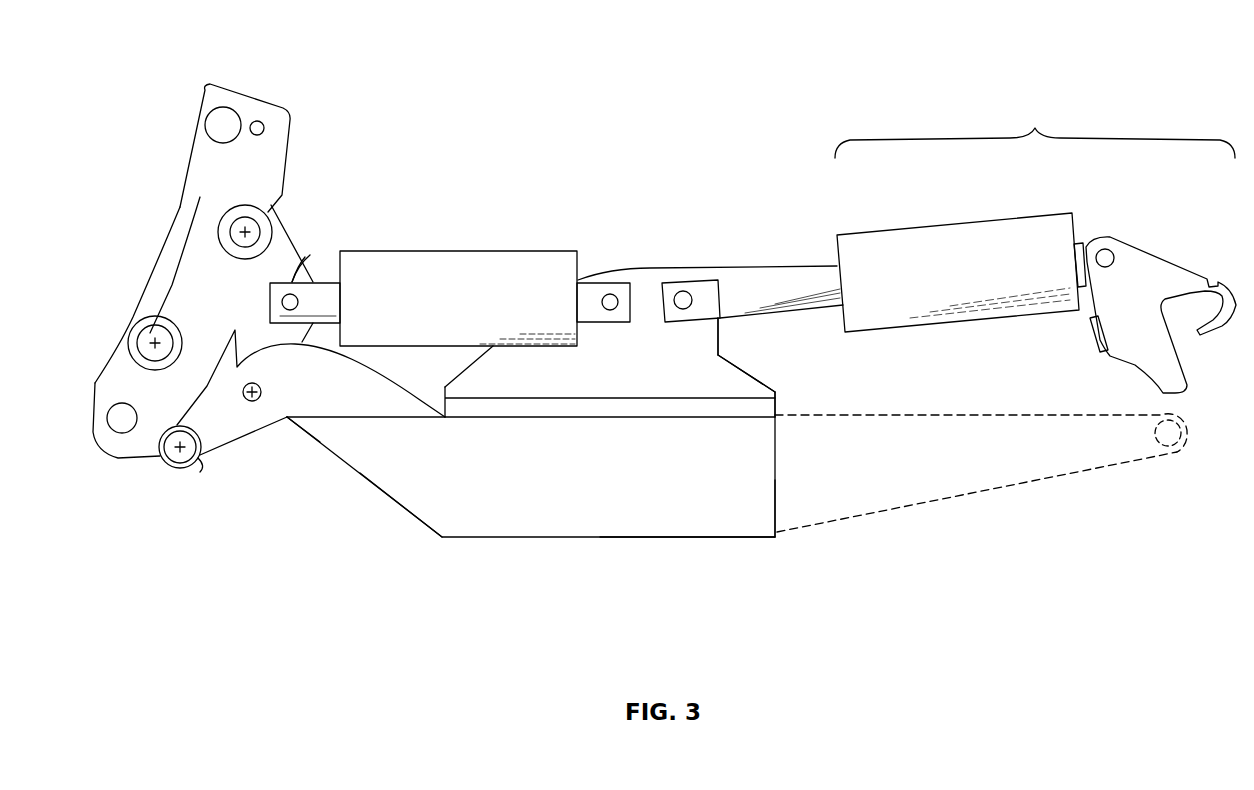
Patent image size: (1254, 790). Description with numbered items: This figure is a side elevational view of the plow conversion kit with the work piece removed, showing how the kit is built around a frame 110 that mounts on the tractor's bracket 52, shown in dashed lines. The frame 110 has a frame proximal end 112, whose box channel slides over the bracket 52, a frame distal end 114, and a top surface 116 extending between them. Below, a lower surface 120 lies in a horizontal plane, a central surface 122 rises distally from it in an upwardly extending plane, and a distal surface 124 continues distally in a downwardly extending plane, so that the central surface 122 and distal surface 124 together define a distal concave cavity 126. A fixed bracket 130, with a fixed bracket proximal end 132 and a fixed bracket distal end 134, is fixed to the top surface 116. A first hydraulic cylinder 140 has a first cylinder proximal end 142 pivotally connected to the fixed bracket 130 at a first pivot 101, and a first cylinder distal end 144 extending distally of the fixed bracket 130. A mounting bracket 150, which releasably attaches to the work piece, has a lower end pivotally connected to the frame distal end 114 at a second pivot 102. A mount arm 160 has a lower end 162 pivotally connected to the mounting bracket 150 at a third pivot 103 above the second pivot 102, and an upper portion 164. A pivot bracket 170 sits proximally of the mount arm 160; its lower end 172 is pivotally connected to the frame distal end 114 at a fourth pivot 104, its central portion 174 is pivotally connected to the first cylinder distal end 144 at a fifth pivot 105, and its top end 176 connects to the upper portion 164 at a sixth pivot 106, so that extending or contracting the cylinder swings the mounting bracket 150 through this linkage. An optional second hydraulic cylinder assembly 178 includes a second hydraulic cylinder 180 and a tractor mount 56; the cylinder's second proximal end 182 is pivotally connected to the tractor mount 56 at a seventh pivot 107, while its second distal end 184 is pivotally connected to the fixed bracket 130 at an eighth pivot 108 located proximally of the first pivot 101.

The bracket 52 is at (934, 480).
The tractor mount 56 is at (1165, 258).
The first pivot 101 is at (610, 296).
The second pivot 102 is at (173, 455).
The third pivot 103 is at (143, 342).
The fourth pivot 104 is at (262, 392).
The fifth pivot 105 is at (298, 302).
The sixth pivot 106 is at (224, 226).
The seventh pivot 107 is at (1108, 252).
The eighth pivot 108 is at (683, 298).
The frame 110 is at (560, 524).
The frame proximal end 112 is at (778, 518).
The frame distal end 114 is at (232, 447).
The top surface 116 is at (776, 412).
The lower surface 120 is at (695, 540).
The central surface 122 is at (412, 522).
The distal surface 124 is at (255, 437).
The distal concave cavity 126 is at (289, 488).
The fixed bracket 130 is at (720, 352).
The fixed bracket proximal end 132 is at (738, 370).
The fixed bracket distal end 134 is at (485, 358).
The first hydraulic cylinder 140 is at (470, 251).
The first cylinder proximal end 142 is at (608, 282).
The first cylinder distal end 144 is at (300, 262).
The mounting bracket 150 is at (253, 93).
The mount arm 160 is at (178, 275).
The lower end 162 is at (140, 338).
The upper portion 164 is at (257, 214).
The pivot bracket 170 is at (278, 233).
The lower end 172 is at (248, 342).
The central portion 174 is at (187, 333).
The top end 176 is at (283, 253).
The second hydraulic cylinder assembly 178 is at (1036, 128).
The second hydraulic cylinder 180 is at (960, 222).
The second proximal end 182 is at (1080, 245).
The second distal end 184 is at (688, 280).